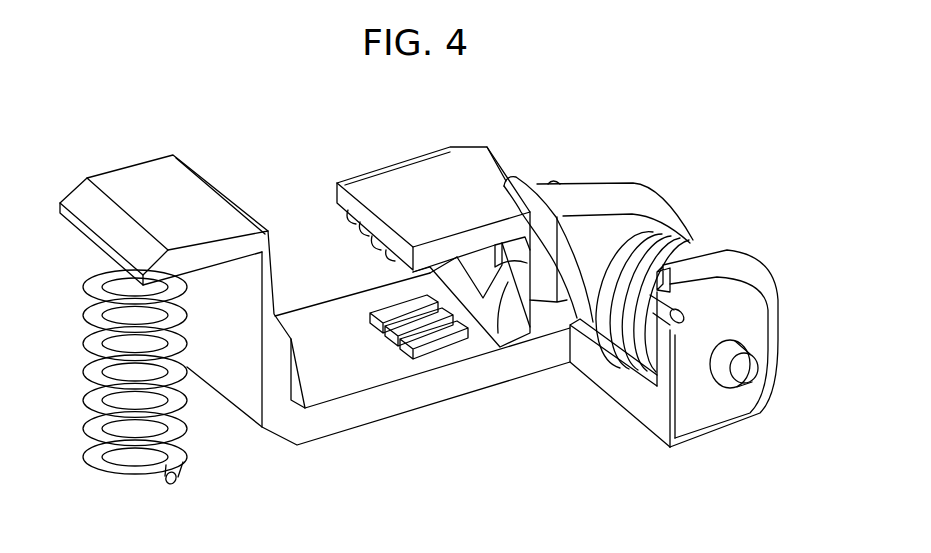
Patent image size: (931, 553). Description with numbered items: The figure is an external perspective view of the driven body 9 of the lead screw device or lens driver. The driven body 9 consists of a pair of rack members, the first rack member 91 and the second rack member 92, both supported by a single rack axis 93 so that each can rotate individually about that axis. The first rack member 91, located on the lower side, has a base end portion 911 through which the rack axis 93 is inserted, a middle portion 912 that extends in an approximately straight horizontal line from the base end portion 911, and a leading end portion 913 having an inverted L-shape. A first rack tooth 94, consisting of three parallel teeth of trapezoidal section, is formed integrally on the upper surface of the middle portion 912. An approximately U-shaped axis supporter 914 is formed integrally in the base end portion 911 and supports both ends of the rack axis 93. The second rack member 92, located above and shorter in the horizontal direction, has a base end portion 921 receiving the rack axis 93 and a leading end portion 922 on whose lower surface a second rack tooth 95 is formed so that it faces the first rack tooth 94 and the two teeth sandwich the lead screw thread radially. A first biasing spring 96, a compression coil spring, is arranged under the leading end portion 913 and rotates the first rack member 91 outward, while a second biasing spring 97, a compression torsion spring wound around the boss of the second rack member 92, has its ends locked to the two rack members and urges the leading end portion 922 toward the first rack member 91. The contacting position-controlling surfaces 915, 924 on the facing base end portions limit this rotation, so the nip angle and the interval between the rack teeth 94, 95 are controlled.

The driven body 9 is at (600, 170).
The first rack member 91 is at (407, 417).
The base end portion 911 is at (550, 332).
The middle portion 912 is at (343, 367).
The leading end portion 913 is at (143, 190).
The axis supporter 914 is at (642, 403).
The position-controlling surface 915 is at (500, 308).
The second rack member 92 is at (502, 158).
The base end portion 921 is at (640, 202).
The leading end portion 922 is at (405, 187).
The position-controlling surface 924 is at (471, 292).
The rack axis 93 is at (747, 373).
The first rack tooth 94 is at (433, 337).
The second rack tooth 95 is at (352, 247).
The first biasing spring 96 is at (112, 458).
The second biasing spring 97 is at (686, 253).